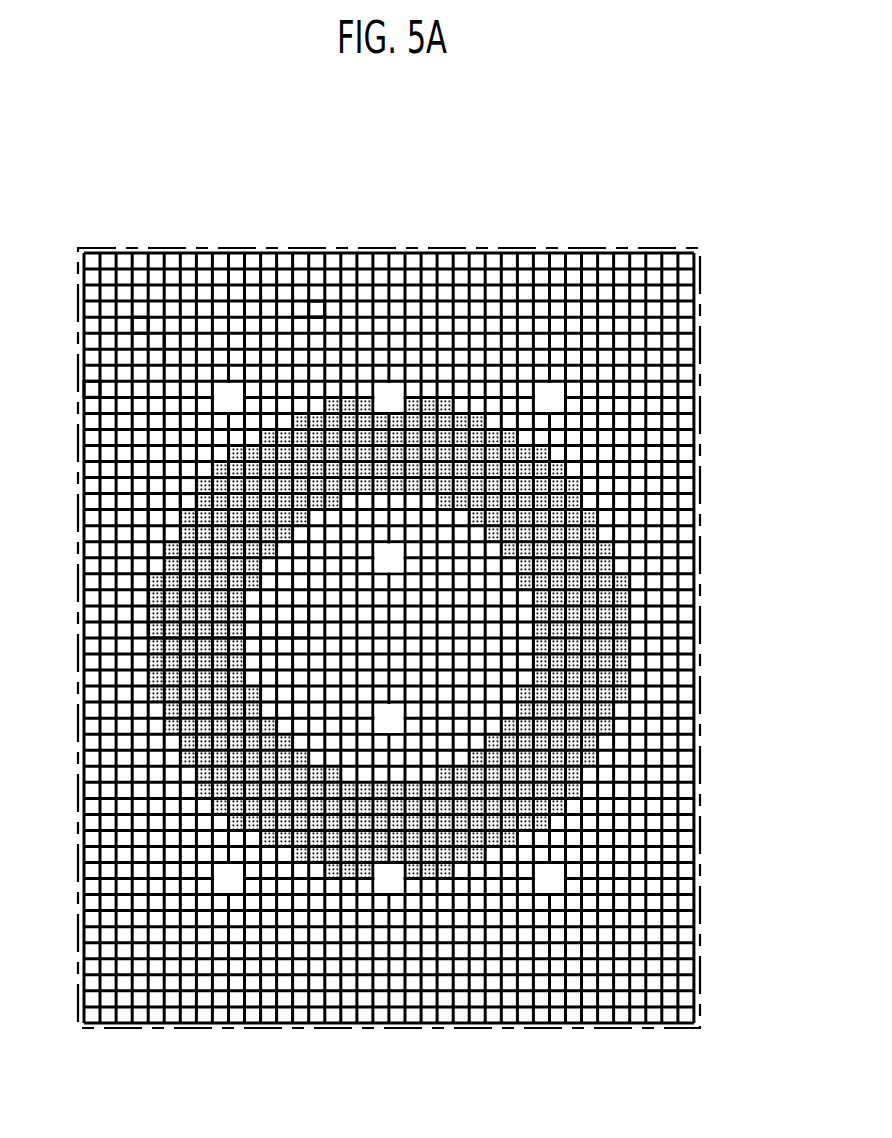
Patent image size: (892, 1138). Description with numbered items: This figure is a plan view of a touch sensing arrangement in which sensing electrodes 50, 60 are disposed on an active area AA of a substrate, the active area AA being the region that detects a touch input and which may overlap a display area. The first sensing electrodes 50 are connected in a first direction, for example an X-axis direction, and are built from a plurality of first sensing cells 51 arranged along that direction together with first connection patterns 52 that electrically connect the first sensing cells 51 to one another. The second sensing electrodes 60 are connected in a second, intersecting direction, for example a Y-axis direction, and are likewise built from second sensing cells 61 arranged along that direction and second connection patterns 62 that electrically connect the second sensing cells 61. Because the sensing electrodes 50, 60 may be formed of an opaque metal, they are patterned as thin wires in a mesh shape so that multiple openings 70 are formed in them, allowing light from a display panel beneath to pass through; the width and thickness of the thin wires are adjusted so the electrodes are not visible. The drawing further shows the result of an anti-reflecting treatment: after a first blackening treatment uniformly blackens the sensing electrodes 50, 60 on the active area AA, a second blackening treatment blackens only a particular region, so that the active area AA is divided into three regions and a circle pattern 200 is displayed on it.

The active area AA is at (513, 222).
The first sensing electrodes 50 is at (150, 473).
The first sensing cells 51 is at (175, 499).
The first connection patterns 52 is at (303, 318).
The second sensing electrodes 60 is at (147, 315).
The second sensing cells 61 is at (171, 350).
The second connection patterns 62 is at (310, 310).
The openings 70 is at (93, 388).
The circle pattern 200 is at (614, 733).